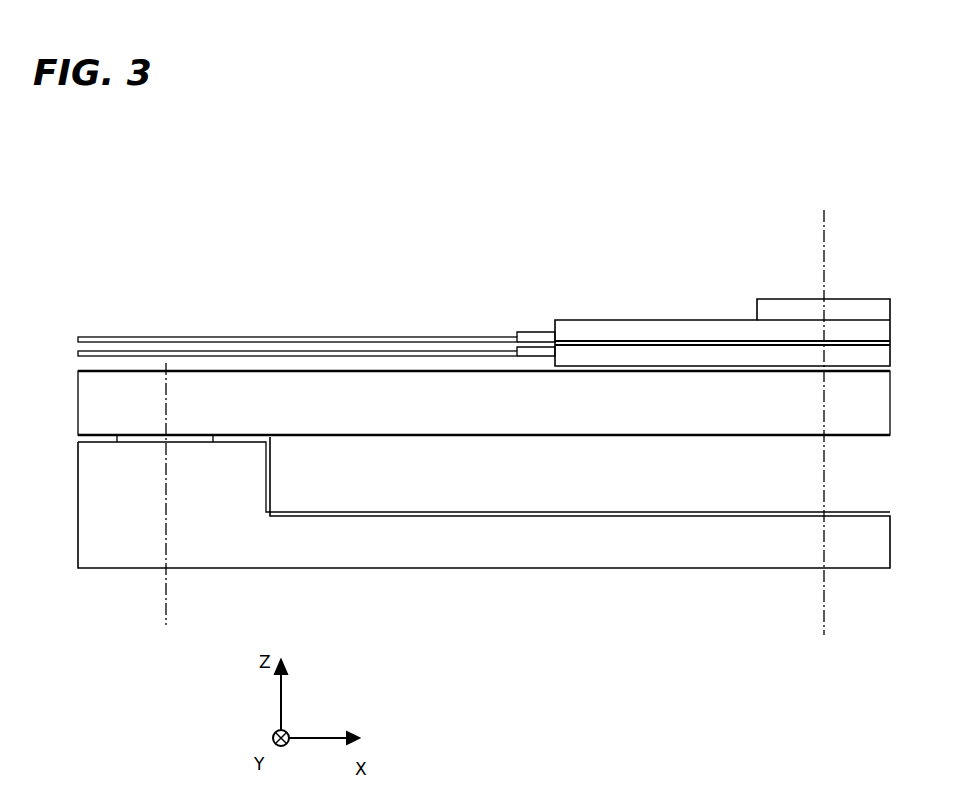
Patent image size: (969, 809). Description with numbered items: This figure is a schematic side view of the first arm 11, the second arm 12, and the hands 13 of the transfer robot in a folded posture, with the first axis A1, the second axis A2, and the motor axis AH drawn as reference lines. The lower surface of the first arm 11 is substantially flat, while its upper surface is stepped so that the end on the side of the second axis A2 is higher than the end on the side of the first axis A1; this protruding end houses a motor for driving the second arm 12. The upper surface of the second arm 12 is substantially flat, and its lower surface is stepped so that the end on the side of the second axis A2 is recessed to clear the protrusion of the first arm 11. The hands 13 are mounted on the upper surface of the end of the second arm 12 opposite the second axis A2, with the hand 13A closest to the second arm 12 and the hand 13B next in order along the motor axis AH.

The first arm 11 is at (422, 557).
The second arm 12 is at (112, 415).
The hand 13 is at (484, 306).
The hand 13A is at (578, 357).
The hand 13B is at (633, 332).
The first axis A1 is at (823, 602).
The second axis A2 is at (163, 597).
The motor axis AH is at (823, 257).